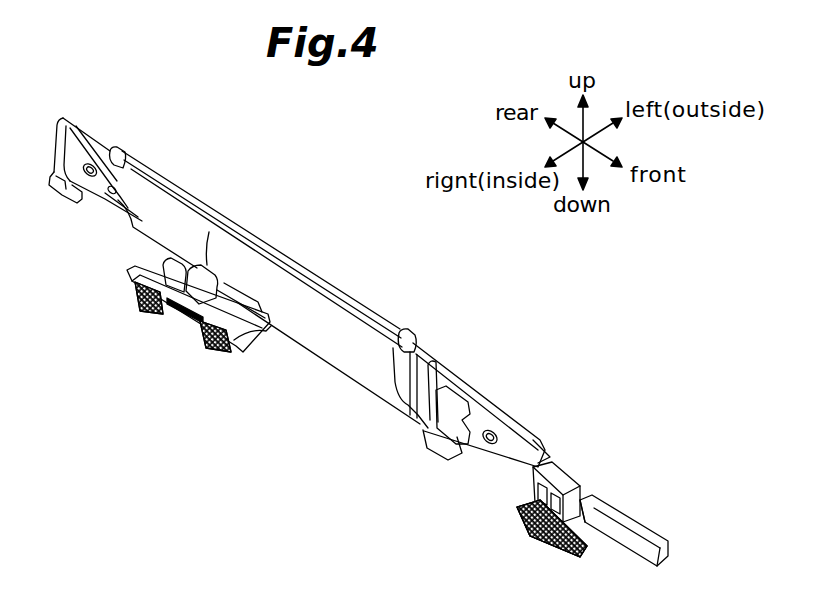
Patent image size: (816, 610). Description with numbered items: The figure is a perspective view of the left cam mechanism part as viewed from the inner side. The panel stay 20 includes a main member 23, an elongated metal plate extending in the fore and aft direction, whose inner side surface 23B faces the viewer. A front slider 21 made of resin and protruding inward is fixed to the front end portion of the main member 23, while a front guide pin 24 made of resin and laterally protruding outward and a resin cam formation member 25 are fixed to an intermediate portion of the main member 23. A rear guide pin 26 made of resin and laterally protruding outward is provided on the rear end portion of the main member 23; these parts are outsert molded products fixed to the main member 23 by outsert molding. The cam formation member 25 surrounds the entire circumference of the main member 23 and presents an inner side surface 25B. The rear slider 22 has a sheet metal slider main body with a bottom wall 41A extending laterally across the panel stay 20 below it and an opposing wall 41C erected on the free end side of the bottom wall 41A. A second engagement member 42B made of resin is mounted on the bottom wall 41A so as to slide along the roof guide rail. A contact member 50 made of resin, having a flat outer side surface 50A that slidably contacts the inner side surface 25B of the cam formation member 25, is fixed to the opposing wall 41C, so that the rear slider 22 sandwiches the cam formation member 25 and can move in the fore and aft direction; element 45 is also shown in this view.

The panel stay 20 is at (364, 279).
The front slider 21 is at (570, 473).
The rear slider 22 is at (165, 334).
The main member 23 is at (473, 404).
The inner side surface 23B is at (414, 360).
The front guide pin 24 is at (438, 444).
The cam formation member 25 is at (289, 257).
The inner side surface 25B is at (338, 353).
The rear guide pin 26 is at (58, 197).
The bottom wall 41A is at (271, 331).
The opposing wall 41C is at (136, 283).
The second engagement member 42B is at (140, 307).
The right protrusion 45 is at (247, 350).
The contact member 50 is at (236, 270).
The outer side surface 50A is at (219, 266).